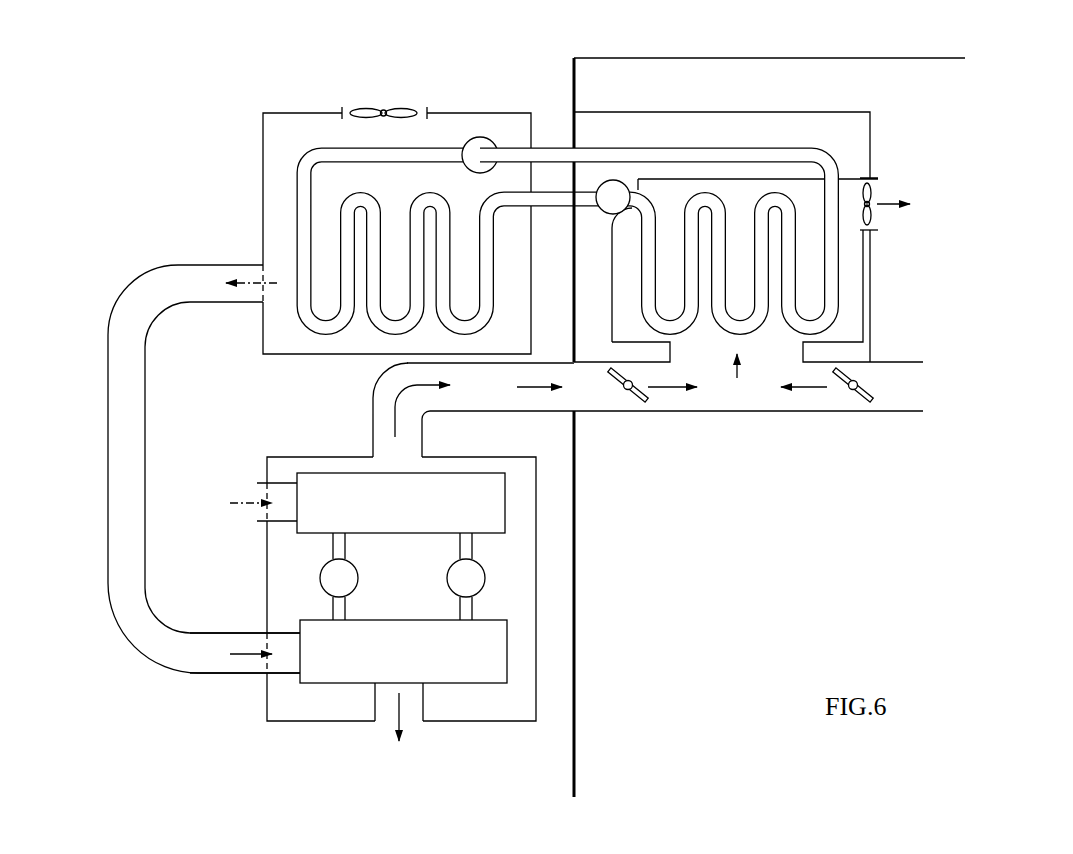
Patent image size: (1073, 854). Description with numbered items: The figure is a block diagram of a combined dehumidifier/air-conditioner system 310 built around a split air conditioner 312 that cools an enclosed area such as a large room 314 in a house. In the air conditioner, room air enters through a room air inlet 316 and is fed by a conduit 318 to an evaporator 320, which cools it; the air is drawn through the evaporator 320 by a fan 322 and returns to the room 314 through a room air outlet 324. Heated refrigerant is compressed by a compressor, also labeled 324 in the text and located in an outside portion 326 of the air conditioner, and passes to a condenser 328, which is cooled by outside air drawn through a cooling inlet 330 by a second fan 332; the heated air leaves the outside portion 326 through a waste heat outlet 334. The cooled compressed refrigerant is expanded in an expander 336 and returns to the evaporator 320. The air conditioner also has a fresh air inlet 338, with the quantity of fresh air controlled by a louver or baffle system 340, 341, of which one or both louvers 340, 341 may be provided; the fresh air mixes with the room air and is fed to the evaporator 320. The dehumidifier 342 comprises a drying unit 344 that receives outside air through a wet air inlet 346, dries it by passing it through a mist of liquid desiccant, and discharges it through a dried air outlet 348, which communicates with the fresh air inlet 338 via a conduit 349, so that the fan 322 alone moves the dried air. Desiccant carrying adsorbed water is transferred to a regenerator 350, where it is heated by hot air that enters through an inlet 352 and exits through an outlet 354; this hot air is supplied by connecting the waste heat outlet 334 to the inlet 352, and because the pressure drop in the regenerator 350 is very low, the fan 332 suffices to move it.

The combined dehumidifier/air-conditioner system 310 is at (340, 202).
The split air conditioner 312 is at (727, 405).
The room 314 is at (513, 520).
The room air inlet 316 is at (905, 383).
The conduit 318 is at (672, 381).
The evaporator 320 is at (832, 318).
The fan 322 is at (872, 195).
The room air outlet / compressor 324 is at (466, 140).
The outside portion 326 is at (285, 113).
The condenser 328 is at (297, 240).
The cooling inlet 330 is at (425, 108).
The fan 332 is at (375, 108).
The waste heat outlet 334 is at (258, 292).
The expander 336 is at (625, 182).
The fresh air inlet 338 is at (574, 398).
The louver or baffle 340 is at (628, 390).
The louver or baffle 341 is at (853, 390).
The dehumidifier 342 is at (88, 498).
The drying unit 344 is at (312, 520).
The wet air inlet 346 is at (257, 487).
The dried air outlet 348 is at (393, 455).
The conduit 349 is at (377, 372).
The regenerator 350 is at (322, 683).
The inlet 352 is at (232, 668).
The outlet 354 is at (415, 700).